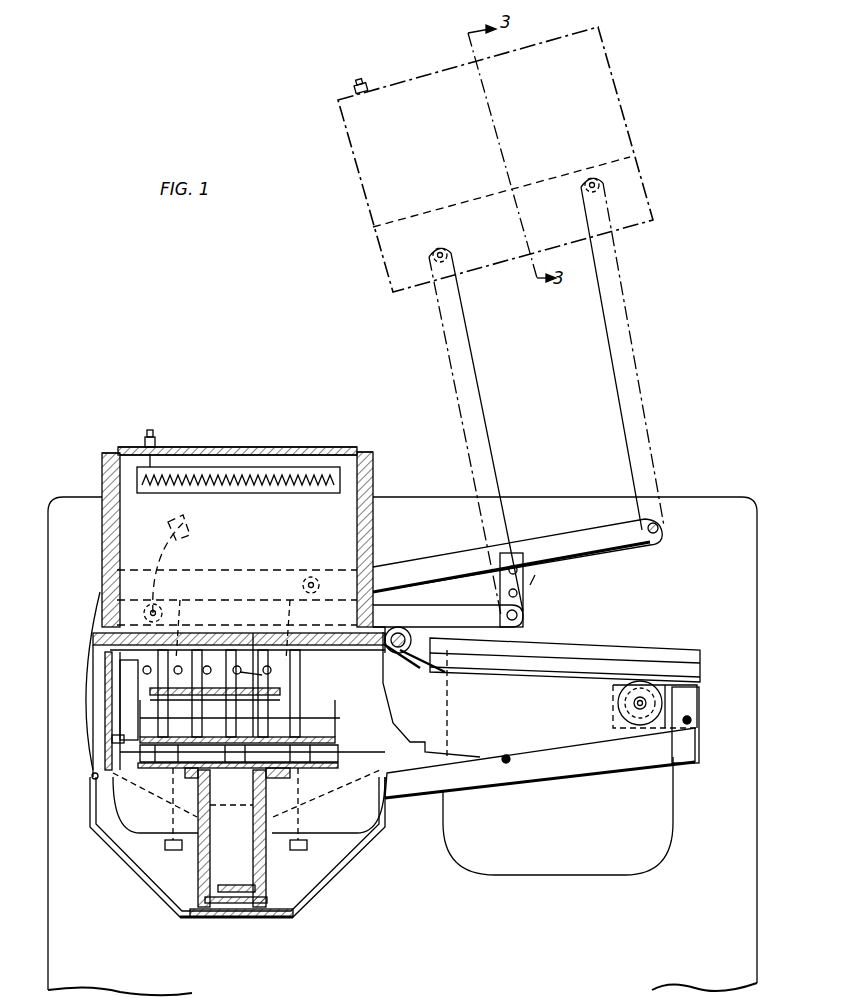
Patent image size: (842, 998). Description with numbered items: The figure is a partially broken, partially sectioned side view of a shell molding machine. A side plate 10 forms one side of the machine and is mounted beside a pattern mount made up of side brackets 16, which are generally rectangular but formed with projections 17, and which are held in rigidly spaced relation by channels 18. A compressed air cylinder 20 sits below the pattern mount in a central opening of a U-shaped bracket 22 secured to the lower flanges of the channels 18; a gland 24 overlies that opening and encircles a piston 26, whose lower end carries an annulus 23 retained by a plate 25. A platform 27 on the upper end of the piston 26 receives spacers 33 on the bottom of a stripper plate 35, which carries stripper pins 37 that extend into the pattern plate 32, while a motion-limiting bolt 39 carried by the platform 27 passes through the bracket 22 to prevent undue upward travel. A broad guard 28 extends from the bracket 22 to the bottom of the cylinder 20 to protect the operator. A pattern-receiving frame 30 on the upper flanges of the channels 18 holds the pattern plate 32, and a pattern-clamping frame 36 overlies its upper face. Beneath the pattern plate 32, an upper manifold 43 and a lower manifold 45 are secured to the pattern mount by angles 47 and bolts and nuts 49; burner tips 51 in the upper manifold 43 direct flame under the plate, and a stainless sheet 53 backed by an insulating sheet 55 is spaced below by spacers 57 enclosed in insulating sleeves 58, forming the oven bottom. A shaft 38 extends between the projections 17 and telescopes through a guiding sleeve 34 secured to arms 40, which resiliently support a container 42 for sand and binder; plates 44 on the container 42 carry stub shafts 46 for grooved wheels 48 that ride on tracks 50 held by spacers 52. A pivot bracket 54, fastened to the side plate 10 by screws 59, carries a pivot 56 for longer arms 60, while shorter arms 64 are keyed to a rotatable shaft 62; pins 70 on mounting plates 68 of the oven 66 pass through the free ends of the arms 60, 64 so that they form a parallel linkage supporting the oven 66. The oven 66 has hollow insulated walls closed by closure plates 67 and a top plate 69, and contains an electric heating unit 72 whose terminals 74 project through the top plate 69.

The side plate 10 is at (752, 880).
The side bracket 16 is at (96, 625).
The projection 17 is at (395, 665).
The channel 18 is at (118, 752).
The compressed air cylinder 20 is at (225, 912).
The bracket 22 is at (128, 850).
The annulus 23 is at (258, 890).
The gland 24 is at (290, 778).
The plate 25 is at (262, 905).
The piston 26 is at (275, 855).
The platform 27 is at (338, 765).
The guard 28 is at (155, 905).
The pattern-receiving frame 30 is at (93, 652).
The pattern plate 32 is at (253, 633).
The spacer 33 is at (168, 752).
The guiding sleeve 34 is at (387, 627).
The stripper plate 35 is at (236, 693).
The pattern-clamping frame 36 is at (93, 640).
The stripper pin 37 is at (215, 720).
The shaft 38 is at (405, 628).
The motion-limiting bolt 39 is at (165, 845).
The arm 40 is at (437, 672).
The container 42 is at (577, 875).
The upper manifold 43 is at (120, 695).
The plate 44 is at (665, 690).
The lower manifold 45 is at (105, 718).
The stub shaft 46 is at (645, 696).
The angle 47 is at (241, 744).
The grooved wheel 48 is at (615, 705).
The bolts and nuts 49 is at (112, 738).
The track 50 is at (418, 782).
The burner tip 51 is at (207, 676).
The spacer 52 is at (507, 765).
The sheet 53 is at (272, 677).
The pivot bracket 54 is at (502, 593).
The sheet 55 is at (215, 711).
The pivot 56 is at (530, 617).
The spacer 57 is at (238, 617).
The sleeve 58 is at (242, 705).
The screw 59 is at (540, 584).
The arm 60 is at (498, 405).
The rotatable shaft 62 is at (662, 528).
The arm 64 is at (635, 336).
The oven 66 is at (360, 203).
The closure plate 67 is at (104, 453).
The mounting plate 68 is at (535, 180).
The top plate 69 is at (306, 447).
The pin 70 is at (440, 248).
The electric heating unit 72 is at (205, 470).
The terminal 74 is at (147, 437).